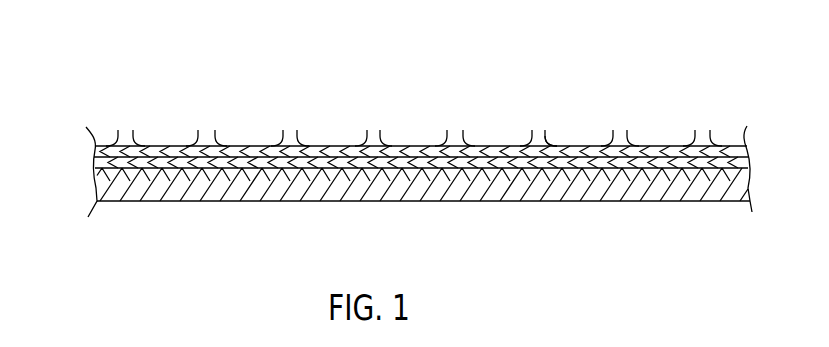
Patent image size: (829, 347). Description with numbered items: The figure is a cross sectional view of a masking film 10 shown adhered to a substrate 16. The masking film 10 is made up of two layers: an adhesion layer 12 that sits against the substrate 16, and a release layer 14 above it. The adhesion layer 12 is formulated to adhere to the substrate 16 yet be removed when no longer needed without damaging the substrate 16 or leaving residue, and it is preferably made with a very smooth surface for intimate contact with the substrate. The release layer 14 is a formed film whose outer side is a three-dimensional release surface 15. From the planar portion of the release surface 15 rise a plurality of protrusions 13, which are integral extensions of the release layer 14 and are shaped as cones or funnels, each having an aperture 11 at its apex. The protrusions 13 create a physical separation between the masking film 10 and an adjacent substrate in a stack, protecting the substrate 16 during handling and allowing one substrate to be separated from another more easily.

The masking film 10 is at (80, 133).
The aperture 11 is at (205, 131).
The adhesion layer 12 is at (147, 145).
The protrusions 13 is at (549, 142).
The release layer 14 is at (246, 152).
The release surface 15 is at (494, 160).
The substrate 16 is at (168, 201).